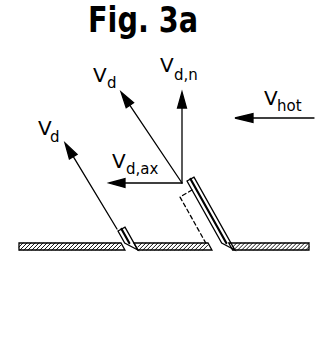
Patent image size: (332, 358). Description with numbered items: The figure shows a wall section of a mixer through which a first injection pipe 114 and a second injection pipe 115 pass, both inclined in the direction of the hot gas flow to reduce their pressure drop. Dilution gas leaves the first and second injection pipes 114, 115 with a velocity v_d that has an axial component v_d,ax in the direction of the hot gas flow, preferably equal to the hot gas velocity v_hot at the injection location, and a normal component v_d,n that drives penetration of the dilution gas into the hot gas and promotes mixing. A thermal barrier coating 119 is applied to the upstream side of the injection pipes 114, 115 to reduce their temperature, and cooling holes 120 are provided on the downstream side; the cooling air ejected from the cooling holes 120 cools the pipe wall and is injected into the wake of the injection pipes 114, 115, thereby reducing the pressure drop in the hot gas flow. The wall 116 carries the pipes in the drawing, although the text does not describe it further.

The first injection pipe 114 is at (210, 241).
The second injection pipe 115 is at (137, 249).
The wall 116 is at (84, 251).
The thermal barrier coating 119 is at (129, 229).
The cooling holes 120 is at (180, 197).